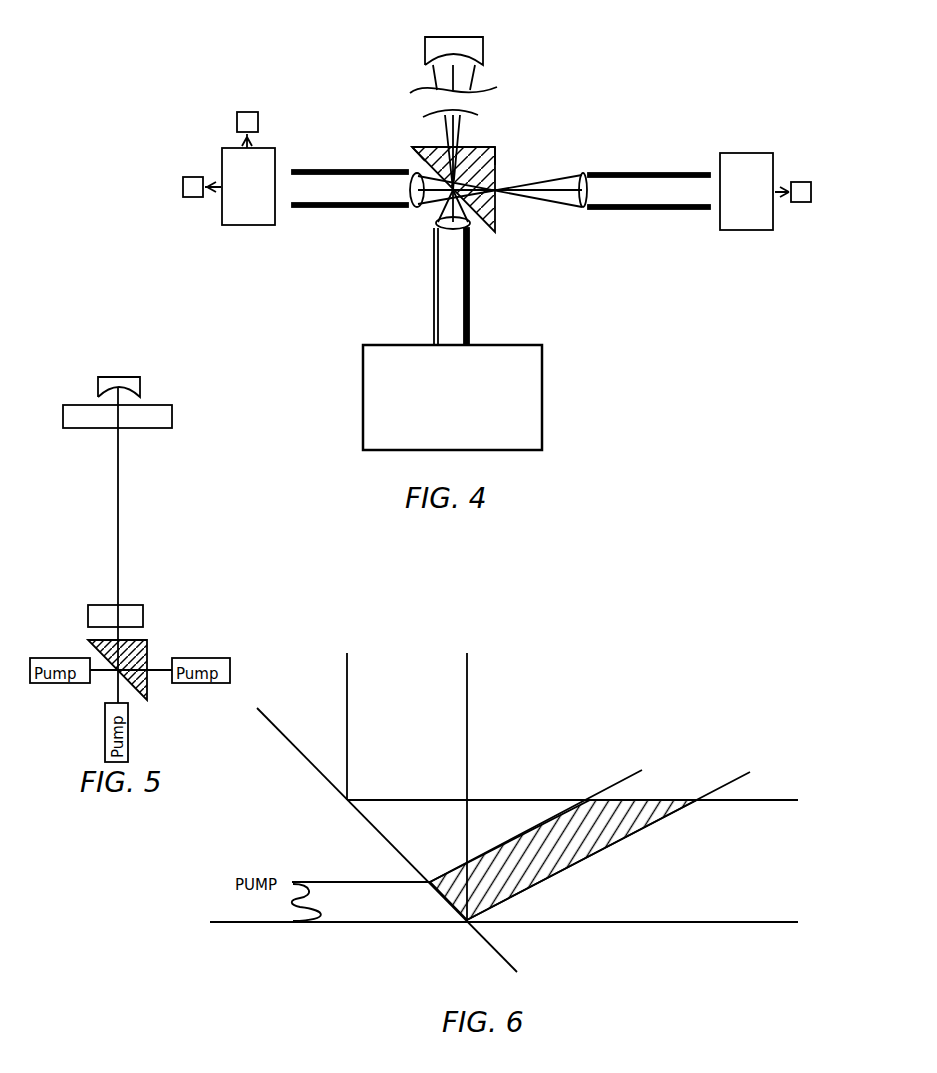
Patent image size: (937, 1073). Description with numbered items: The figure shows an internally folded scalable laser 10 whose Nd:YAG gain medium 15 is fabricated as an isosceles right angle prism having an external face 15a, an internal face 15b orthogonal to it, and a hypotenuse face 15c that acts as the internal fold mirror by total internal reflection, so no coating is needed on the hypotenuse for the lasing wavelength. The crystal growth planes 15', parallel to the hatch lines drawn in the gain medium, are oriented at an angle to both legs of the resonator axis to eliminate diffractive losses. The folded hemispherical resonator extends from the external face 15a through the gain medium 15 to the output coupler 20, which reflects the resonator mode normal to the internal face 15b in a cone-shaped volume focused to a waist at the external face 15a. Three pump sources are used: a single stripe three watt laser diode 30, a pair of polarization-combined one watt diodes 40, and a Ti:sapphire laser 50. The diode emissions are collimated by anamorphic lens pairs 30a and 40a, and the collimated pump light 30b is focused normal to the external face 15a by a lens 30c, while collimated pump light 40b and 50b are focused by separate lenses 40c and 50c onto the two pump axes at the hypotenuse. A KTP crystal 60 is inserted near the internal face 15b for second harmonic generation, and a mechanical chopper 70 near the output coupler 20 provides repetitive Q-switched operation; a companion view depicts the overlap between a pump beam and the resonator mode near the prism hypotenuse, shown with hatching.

In FIG. 4, the internally folded scalable laser 10 is at (717, 87).
In FIG. 4, the Nd:YAG gain medium 15 is at (502, 194).
In FIG. 6, the Nd:YAG gain medium 15 is at (593, 876).
In FIG. 4, the crystal growth planes 15' is at (400, 134).
In FIG. 5, the crystal growth planes 15' is at (99, 664).
In FIG. 4, the external face 15a is at (495, 155).
In FIG. 4, the internal face 15b is at (490, 147).
In FIG. 4, the hypotenuse face 15c is at (411, 155).
In FIG. 4, the output coupler 20 is at (444, 37).
In FIG. 5, the output coupler 20 is at (111, 375).
In FIG. 4, the single stripe 3 W laser diode 30 is at (811, 190).
In FIG. 4, the anamorphic lens pair 30a is at (737, 230).
In FIG. 4, the collimated pump light 30b is at (663, 173).
In FIG. 4, the 8 mm focal length lens 30c is at (591, 166).
In FIG. 4, the polarization-combined single stripe 1 W diodes 40 is at (235, 115).
In FIG. 4, the anamorphic lens pair 40a is at (255, 225).
In FIG. 4, the collimated pump light 40b is at (315, 170).
In FIG. 4, the lens 40c is at (407, 208).
In FIG. 4, the Ti:sapphire laser 50 is at (363, 392).
In FIG. 4, the collimated pump light 50b is at (448, 292).
In FIG. 4, the lens 50c is at (432, 226).
In FIG. 5, the KTP crystal 60 is at (88, 612).
In FIG. 5, the mechanical chopper 70 is at (63, 413).